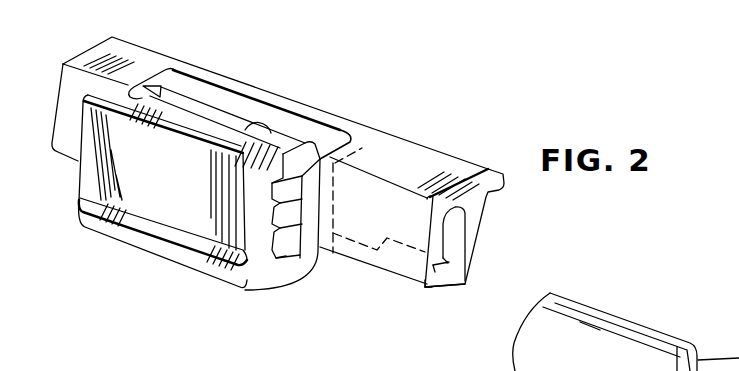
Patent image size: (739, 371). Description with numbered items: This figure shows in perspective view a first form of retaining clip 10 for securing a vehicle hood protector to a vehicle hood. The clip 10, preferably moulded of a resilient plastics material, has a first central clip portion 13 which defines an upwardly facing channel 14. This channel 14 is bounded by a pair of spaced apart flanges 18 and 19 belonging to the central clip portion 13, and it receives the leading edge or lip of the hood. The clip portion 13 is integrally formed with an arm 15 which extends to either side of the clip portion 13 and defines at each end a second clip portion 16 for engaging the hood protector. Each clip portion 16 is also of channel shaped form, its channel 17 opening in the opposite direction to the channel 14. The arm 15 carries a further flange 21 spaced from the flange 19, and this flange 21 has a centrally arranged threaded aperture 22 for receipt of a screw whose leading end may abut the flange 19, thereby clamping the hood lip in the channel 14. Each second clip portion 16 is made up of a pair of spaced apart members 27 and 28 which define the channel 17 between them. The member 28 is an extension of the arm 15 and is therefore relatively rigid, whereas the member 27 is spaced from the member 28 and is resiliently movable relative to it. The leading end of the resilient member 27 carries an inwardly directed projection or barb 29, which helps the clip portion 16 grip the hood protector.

The retaining clip 10 is at (333, 88).
The first central clip portion 13 is at (133, 267).
The channel 14 is at (289, 257).
The arm 15 is at (262, 176).
The second clip portions 16 is at (150, 53).
The channel 17 is at (454, 292).
The flange 18 is at (262, 230).
The flange 19 is at (308, 210).
The further flange 21 is at (253, 98).
The threaded aperture 22 is at (268, 121).
The member 27 is at (430, 277).
The member 28 is at (473, 223).
The projection or barb 29 is at (435, 272).